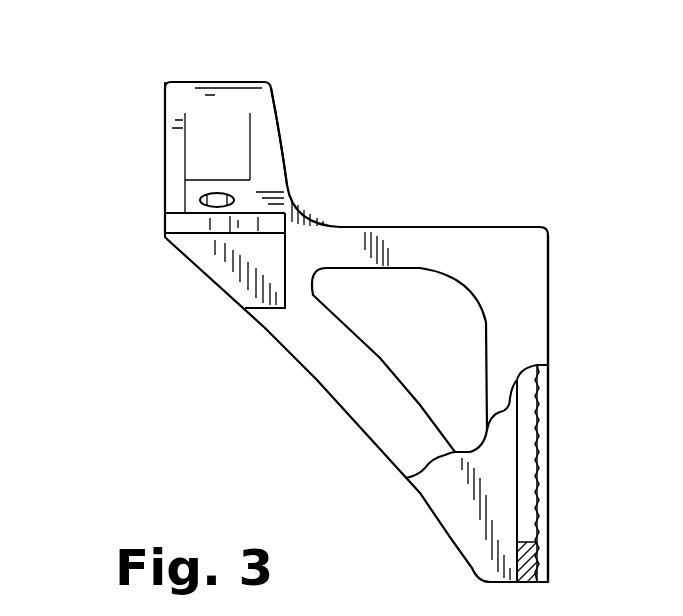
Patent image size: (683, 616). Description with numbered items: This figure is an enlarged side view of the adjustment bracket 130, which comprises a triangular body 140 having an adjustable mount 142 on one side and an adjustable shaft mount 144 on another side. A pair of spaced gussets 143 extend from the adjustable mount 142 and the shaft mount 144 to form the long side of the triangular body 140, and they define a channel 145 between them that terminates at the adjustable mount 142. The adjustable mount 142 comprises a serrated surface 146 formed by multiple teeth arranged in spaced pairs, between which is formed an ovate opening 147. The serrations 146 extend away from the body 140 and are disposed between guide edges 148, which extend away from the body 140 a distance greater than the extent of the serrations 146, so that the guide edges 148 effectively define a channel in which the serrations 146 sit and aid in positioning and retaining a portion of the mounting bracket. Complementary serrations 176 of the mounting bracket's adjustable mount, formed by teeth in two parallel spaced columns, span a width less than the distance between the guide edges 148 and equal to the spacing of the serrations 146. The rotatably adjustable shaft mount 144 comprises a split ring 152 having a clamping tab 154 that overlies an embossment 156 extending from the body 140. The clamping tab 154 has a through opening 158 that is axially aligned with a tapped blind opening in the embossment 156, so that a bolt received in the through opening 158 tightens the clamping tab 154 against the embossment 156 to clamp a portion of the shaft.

The adjustment bracket 130 is at (395, 187).
The triangular body 140 is at (330, 398).
The adjustable mount 142 is at (553, 447).
The gussets 143 is at (402, 435).
The adjustable shaft mount 144 is at (158, 108).
The channel 145 is at (453, 507).
The serrated surface 146 is at (547, 395).
The ovate opening 147 is at (547, 493).
The guide edges 148 is at (550, 287).
The split ring 152 is at (162, 148).
The clamping tab 154 is at (165, 213).
The embossment 156 is at (230, 265).
The through opening 158 is at (222, 195).
The serrations 176 is at (545, 420).